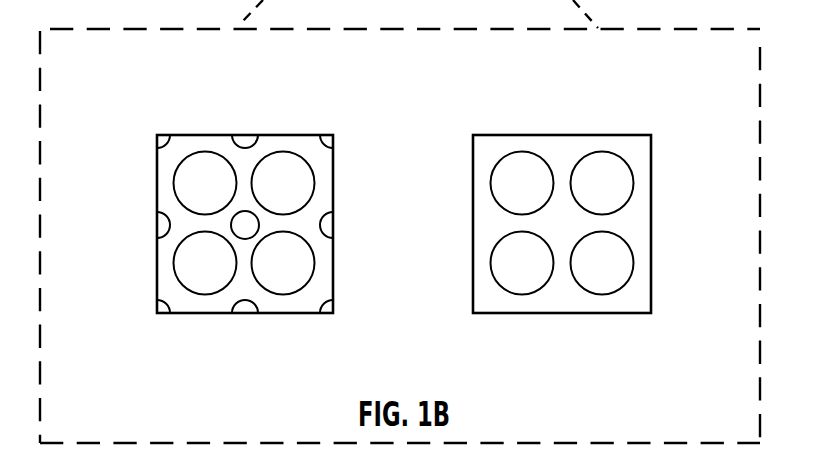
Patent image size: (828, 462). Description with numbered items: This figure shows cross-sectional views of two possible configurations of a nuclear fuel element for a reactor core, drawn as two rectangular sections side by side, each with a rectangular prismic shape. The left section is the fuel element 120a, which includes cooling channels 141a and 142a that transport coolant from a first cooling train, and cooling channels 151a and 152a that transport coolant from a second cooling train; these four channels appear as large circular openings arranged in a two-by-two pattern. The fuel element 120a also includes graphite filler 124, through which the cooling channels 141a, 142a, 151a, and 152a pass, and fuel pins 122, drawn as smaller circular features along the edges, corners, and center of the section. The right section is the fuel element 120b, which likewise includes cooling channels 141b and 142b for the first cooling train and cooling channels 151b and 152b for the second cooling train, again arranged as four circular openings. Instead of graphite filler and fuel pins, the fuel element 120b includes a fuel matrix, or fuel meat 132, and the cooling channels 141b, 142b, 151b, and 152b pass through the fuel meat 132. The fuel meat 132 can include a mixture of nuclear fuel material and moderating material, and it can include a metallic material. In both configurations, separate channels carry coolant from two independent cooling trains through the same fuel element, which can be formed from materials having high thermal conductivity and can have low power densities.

The fuel element 120a is at (231, 222).
The fuel element 120b is at (554, 223).
The fuel pins 122 is at (155, 225).
The graphite filler 124 is at (322, 263).
The fuel meat 132 is at (633, 230).
The cooling channel 141a is at (184, 152).
The cooling channel 142a is at (269, 152).
The cooling channel 151a is at (185, 291).
The cooling channel 152a is at (270, 291).
The cooling channel 141b is at (534, 152).
The cooling channel 142b is at (618, 152).
The cooling channel 151b is at (543, 289).
The cooling channel 152b is at (623, 287).